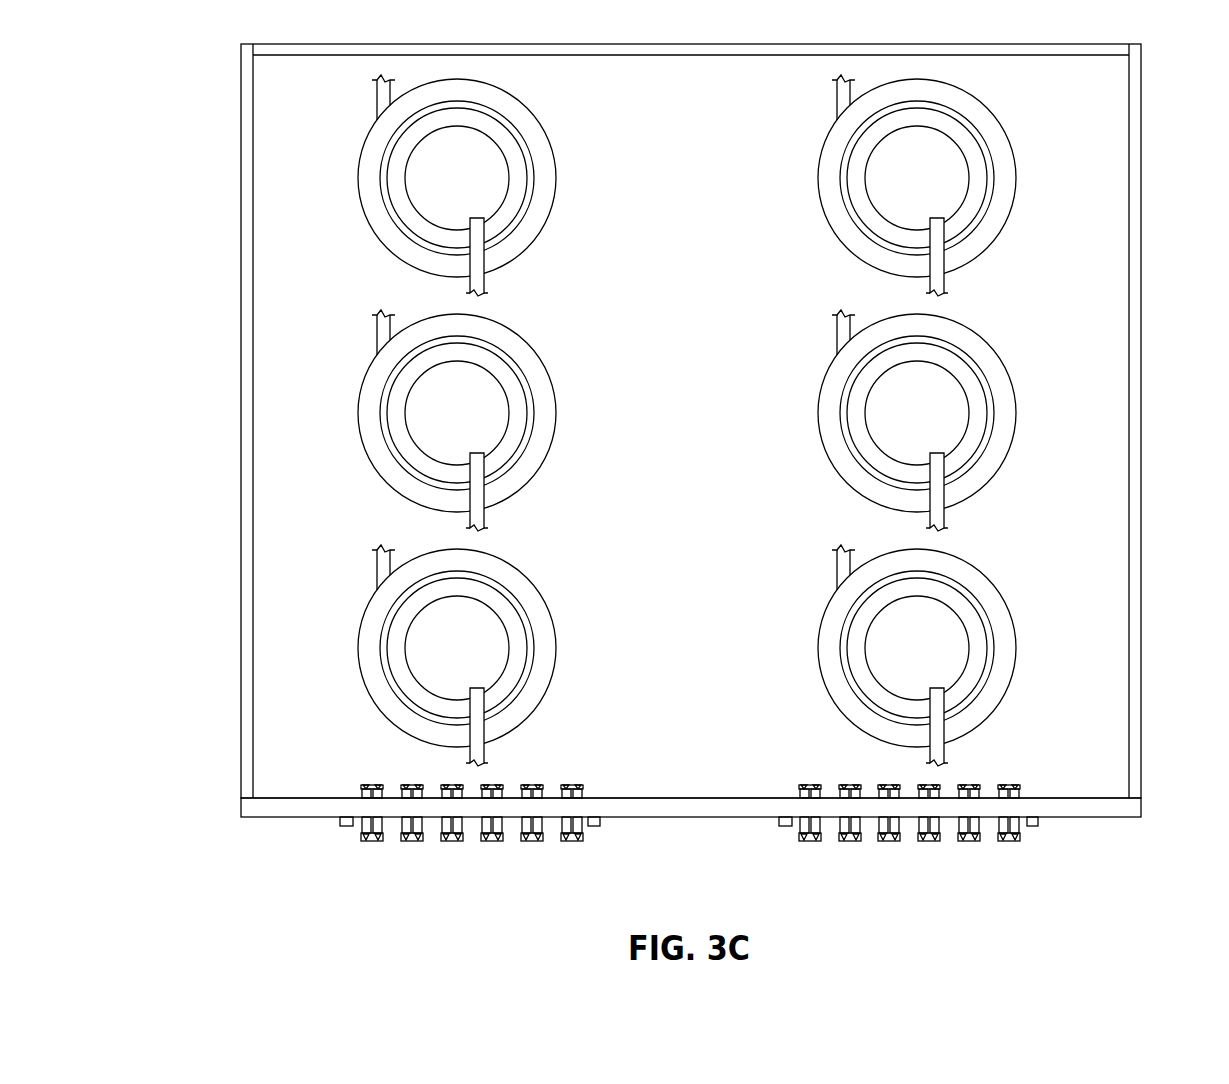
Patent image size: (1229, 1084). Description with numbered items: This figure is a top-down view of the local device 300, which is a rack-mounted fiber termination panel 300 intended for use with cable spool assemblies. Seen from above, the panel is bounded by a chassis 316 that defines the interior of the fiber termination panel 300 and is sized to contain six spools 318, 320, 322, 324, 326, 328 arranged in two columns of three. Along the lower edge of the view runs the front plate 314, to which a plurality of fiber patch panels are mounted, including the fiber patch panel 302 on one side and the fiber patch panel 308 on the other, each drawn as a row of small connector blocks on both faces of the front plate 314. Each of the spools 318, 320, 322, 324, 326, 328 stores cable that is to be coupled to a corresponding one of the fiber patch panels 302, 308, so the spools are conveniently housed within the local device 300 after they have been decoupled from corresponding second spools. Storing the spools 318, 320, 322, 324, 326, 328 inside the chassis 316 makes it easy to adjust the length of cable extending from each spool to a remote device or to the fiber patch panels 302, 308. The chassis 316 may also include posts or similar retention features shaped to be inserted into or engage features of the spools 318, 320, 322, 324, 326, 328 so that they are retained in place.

The local device 300 is at (176, 107).
The fiber patch panel 302 is at (395, 807).
The fiber patch panel 308 is at (957, 812).
The front plate 314 is at (1048, 805).
The chassis 316 is at (295, 446).
The spool 318 is at (375, 633).
The spool 320 is at (374, 380).
The spool 322 is at (374, 143).
The spool 324 is at (836, 633).
The spool 326 is at (836, 382).
The spool 328 is at (836, 143).